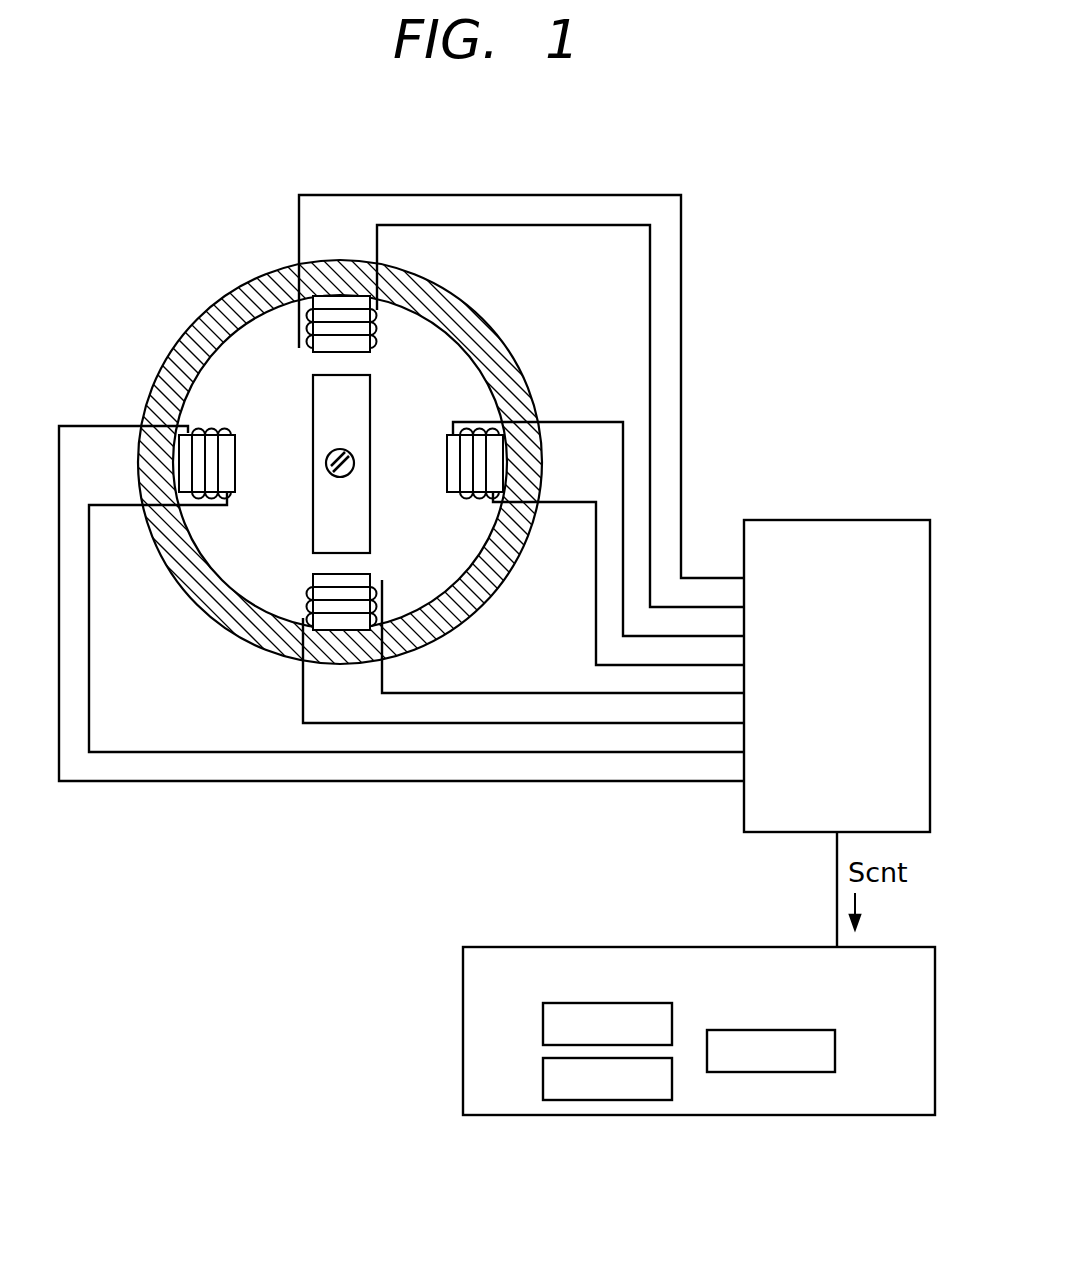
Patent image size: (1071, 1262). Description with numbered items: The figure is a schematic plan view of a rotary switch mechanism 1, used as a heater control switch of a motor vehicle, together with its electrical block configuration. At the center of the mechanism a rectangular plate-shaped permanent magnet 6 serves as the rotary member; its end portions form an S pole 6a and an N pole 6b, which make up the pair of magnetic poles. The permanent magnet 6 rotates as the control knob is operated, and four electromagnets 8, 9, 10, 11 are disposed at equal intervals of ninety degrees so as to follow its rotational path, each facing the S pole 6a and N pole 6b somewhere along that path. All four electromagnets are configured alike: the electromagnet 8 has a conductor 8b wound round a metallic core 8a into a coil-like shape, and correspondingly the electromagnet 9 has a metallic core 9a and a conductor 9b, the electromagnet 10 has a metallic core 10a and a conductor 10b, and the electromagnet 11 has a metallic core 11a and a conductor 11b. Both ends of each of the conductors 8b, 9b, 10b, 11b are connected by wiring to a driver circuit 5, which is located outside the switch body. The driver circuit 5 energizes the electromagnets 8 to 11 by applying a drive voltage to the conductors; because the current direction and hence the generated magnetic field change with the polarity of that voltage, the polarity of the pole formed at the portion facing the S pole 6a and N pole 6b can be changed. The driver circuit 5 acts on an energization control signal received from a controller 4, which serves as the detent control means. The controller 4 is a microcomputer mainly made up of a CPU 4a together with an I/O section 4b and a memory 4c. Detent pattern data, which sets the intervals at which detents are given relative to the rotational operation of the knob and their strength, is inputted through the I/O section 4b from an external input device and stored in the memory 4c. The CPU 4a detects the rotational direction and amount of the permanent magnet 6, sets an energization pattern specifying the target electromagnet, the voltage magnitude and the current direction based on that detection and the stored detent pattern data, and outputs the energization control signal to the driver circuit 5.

The rotary switch mechanism 1 is at (710, 235).
The controller 4 is at (699, 1001).
The CPU 4a is at (835, 1045).
The I/O section 4b is at (543, 1010).
The memory 4c is at (543, 1074).
The driver circuit 5 is at (903, 520).
The permanent magnet 6 is at (328, 446).
The S pole 6a is at (330, 372).
The N pole 6b is at (330, 556).
The electromagnet 8 is at (405, 328).
The metallic core 8a is at (355, 357).
The conductor 8b is at (380, 348).
The electromagnet 9 is at (290, 610).
The metallic core 9a is at (372, 574).
The conductor 9b is at (306, 595).
The electromagnet 10 is at (476, 527).
The metallic core 10a is at (447, 453).
The conductor 10b is at (447, 495).
The electromagnet 11 is at (206, 400).
The metallic core 11a is at (234, 453).
The conductor 11b is at (220, 432).